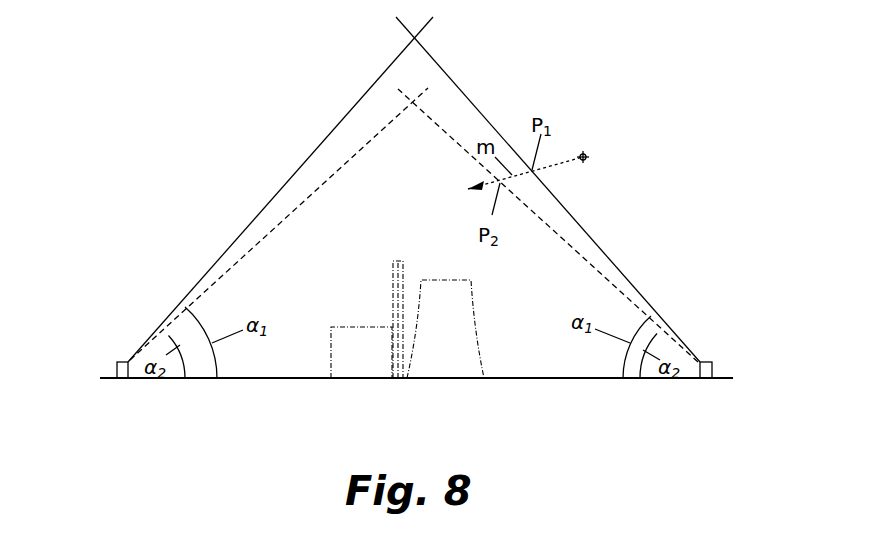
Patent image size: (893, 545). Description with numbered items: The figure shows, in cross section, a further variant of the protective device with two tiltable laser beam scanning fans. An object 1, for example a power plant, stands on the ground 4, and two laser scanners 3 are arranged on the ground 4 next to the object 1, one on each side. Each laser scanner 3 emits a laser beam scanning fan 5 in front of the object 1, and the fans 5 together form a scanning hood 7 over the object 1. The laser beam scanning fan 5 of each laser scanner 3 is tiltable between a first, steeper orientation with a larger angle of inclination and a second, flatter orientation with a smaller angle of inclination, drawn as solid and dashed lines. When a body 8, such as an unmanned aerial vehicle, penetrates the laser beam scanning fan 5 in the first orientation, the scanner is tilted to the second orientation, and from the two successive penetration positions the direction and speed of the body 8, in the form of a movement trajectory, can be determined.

The object 1 is at (397, 292).
The laser scanner 3 is at (118, 378).
The ground 4 is at (316, 379).
The laser beam scanning fan 5 is at (300, 164).
The scanning hood 7 is at (407, 297).
The body 8 is at (585, 153).